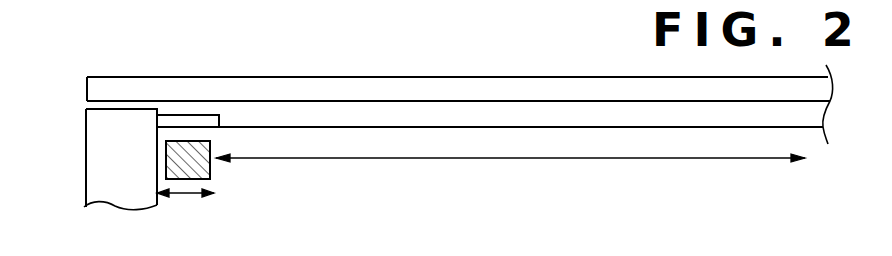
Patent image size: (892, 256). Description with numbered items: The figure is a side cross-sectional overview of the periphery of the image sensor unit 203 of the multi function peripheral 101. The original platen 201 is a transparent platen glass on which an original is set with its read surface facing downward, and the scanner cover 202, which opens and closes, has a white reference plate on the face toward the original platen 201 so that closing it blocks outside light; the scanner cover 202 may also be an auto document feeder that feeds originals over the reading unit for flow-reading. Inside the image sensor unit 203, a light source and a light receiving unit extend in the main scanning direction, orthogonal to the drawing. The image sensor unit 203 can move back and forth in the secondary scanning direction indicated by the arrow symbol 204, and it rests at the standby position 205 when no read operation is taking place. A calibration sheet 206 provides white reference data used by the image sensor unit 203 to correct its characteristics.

The multi function peripheral 101 is at (86, 183).
The original platen 201 is at (326, 127).
The scanner cover 202 is at (541, 77).
The image sensor unit 203 is at (213, 173).
The arrow symbol 204 is at (612, 160).
The standby position 205 is at (184, 195).
The calibration sheet 206 is at (184, 115).